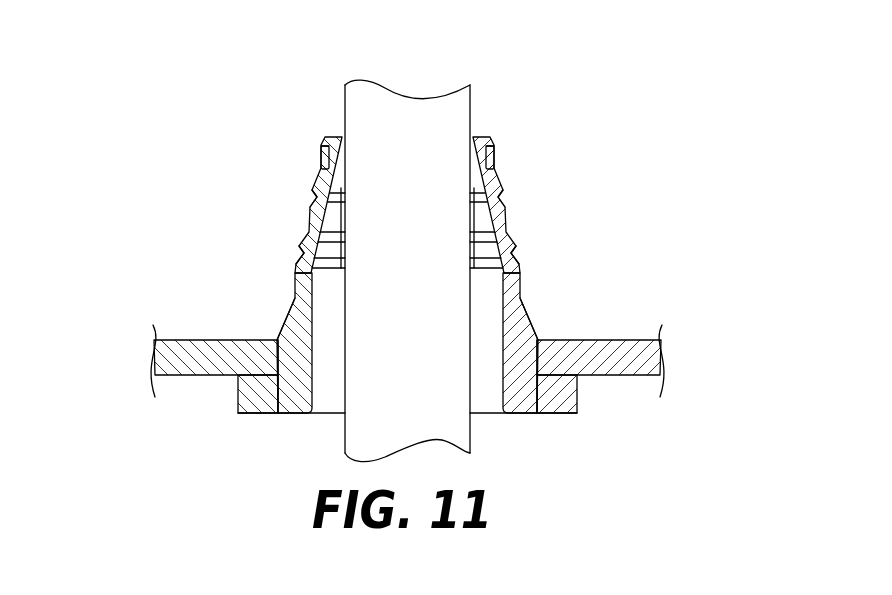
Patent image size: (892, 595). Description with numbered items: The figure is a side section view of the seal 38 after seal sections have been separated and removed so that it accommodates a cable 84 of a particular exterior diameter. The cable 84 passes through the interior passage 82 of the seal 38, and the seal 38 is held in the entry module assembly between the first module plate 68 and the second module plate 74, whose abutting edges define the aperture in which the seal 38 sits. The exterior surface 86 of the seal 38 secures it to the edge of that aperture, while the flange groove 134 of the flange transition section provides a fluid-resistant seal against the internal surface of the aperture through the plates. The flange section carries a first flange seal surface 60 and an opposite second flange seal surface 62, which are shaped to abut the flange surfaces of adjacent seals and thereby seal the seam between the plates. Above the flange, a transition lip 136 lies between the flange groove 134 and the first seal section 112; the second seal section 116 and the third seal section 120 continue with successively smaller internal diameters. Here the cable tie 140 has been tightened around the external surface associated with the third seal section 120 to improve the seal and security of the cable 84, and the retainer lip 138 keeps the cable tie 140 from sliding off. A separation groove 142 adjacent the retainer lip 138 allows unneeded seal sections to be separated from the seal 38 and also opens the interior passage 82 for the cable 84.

The seal 38 is at (417, 243).
The first flange seal surface 60 is at (236, 397).
The second flange seal surface 62 is at (578, 392).
The first module plate 68 is at (205, 341).
The second module plate 74 is at (593, 367).
The interior passage 82 is at (482, 295).
The cable 84 is at (377, 97).
The exterior surface 86 is at (530, 310).
The first seal section 112 is at (297, 293).
The second seal section 116 is at (312, 215).
The third seal section 120 is at (477, 158).
The flange groove 134 is at (276, 353).
The transition lip 136 is at (278, 330).
The retainer lip 138 is at (326, 146).
The cable tie 140 is at (320, 156).
The separation groove 142 is at (482, 137).